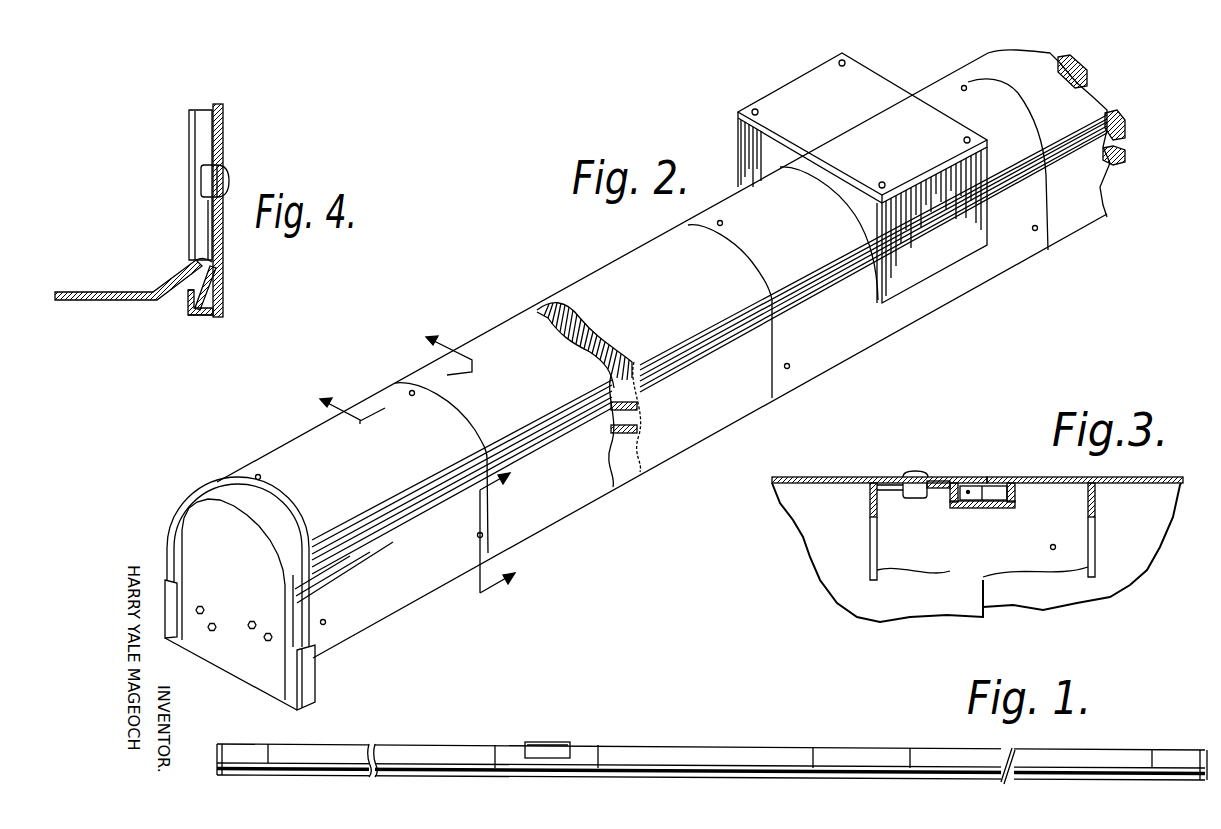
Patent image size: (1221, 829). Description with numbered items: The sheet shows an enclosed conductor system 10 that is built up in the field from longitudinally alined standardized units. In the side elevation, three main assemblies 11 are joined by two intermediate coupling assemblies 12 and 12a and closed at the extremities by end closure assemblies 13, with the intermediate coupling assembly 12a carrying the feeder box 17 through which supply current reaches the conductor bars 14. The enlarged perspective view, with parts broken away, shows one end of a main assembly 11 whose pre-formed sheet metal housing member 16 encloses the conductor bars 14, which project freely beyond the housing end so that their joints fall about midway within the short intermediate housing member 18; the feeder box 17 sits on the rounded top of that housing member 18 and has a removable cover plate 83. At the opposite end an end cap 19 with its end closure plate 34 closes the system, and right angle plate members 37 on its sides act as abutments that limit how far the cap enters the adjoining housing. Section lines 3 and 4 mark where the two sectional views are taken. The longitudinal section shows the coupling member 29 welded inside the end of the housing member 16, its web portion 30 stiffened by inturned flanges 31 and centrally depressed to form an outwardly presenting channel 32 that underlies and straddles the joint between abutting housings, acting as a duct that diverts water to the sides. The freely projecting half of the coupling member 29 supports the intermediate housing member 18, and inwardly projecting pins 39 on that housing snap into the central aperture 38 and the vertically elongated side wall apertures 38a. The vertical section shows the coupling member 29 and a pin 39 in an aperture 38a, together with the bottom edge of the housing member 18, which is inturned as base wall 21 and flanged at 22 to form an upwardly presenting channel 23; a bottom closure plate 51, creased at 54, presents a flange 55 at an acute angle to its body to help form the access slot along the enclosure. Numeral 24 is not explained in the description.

In FIG. 2, the section line 3— 3 is at (383, 373).
In FIG. 2, the section line 4— 4 is at (504, 528).
In FIG. 1, the enclosed conductor system 10 is at (855, 756).
In FIG. 2, the main assembly 11 is at (497, 326).
In FIG. 1, the main assembly 11 is at (420, 728).
In FIG. 1, the intermediate coupling assembly 12 is at (882, 756).
In FIG. 2, the intermediate coupling assembly with feeder box 12a is at (783, 282).
In FIG. 1, the intermediate coupling assembly with feeder box 12a is at (508, 755).
In FIG. 2, the end closure assembly 13 is at (402, 468).
In FIG. 1, the end closure assembly 13 is at (252, 728).
In FIG. 2, the conductor bar 14 is at (578, 322).
In FIG. 2, the housing member 16 is at (688, 423).
In FIG. 3, the housing member 16 is at (1148, 480).
In FIG. 2, the feeder box 17 is at (770, 152).
In FIG. 2, the intermediate housing member 18 is at (850, 333).
In FIG. 3, the intermediate housing member 18 is at (815, 477).
In FIG. 4, the intermediate housing member 18 is at (226, 140).
In FIG. 2, the end cap 19 is at (200, 516).
In FIG. 4, the inturned base wall 21 is at (203, 314).
In FIG. 4, the flange 22 is at (188, 298).
In FIG. 4, the channel 23 is at (217, 303).
In FIG. 2, the mounting bracket 24 is at (550, 523).
In FIG. 3, the coupling member 29 is at (960, 547).
In FIG. 4, the coupling member 29 is at (202, 132).
In FIG. 3, the web portion 30 is at (947, 477).
In FIG. 3, the inturned flange 31 is at (870, 503).
In FIG. 3, the outwardly presenting channel 32 is at (970, 492).
In FIG. 2, the end closure plate 34 is at (231, 604).
In FIG. 2, the right angle plate member 37 is at (165, 641).
In FIG. 3, the pin-receiving aperture 38 is at (900, 491).
In FIG. 4, the side wall aperture 38a is at (210, 203).
In FIG. 2, the pin 39 is at (718, 227).
In FIG. 3, the pin 39 is at (917, 472).
In FIG. 4, the pin 39 is at (210, 181).
In FIG. 4, the bottom closure plate 51 is at (117, 298).
In FIG. 4, the crease 54 is at (215, 260).
In FIG. 4, the flange 55 is at (217, 287).
In FIG. 2, the cover plate 83 is at (862, 128).